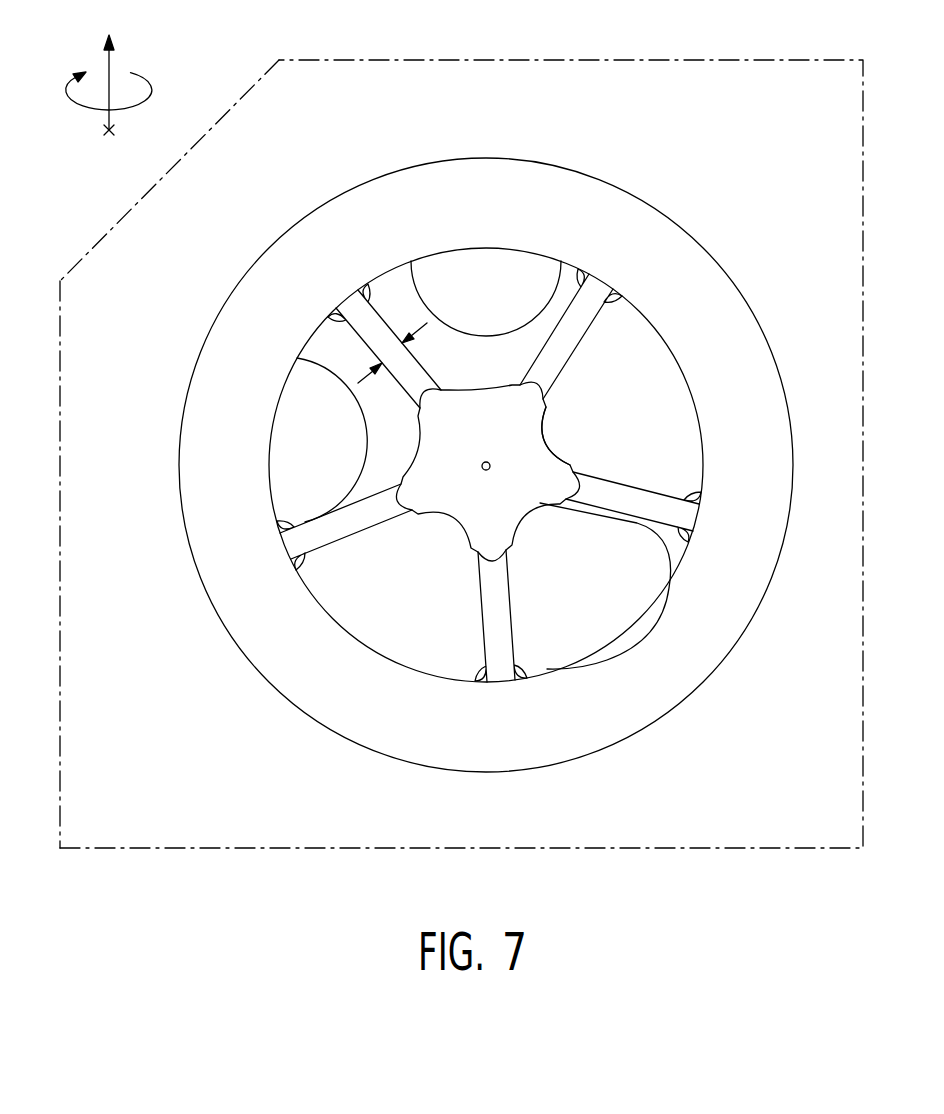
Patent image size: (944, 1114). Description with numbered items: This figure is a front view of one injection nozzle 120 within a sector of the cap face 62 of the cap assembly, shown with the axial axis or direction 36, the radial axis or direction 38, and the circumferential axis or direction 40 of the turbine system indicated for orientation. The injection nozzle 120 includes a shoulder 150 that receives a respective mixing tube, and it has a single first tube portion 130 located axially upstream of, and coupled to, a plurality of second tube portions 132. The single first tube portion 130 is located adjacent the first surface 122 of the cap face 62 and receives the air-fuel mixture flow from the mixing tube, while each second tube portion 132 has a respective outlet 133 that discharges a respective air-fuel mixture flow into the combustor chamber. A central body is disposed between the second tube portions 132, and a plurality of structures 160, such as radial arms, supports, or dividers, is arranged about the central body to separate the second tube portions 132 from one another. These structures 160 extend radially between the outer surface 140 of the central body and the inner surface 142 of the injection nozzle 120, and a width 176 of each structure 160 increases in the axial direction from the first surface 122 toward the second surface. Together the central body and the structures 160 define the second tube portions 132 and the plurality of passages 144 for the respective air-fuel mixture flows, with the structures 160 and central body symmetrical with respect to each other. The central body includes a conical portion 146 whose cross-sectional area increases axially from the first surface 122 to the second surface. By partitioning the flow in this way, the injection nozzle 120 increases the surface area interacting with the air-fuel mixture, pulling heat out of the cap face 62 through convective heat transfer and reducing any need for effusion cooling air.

The axial axis or direction 36 is at (114, 130).
The radial axis or direction 38 is at (130, 73).
The circumferential axis or direction 40 is at (87, 107).
The cap face 62 is at (270, 114).
The injection nozzle 120 is at (404, 706).
The first surface 122 is at (143, 391).
The single first tube portion 130 is at (458, 498).
The second tube portion 132 is at (400, 283).
The outlet 133 is at (537, 266).
The outer surface of the central body 140 is at (513, 492).
The inner surface of the injection nozzle 142 is at (273, 432).
The passage 144 is at (508, 299).
The conical portion 146 is at (485, 432).
The shoulder 150 is at (304, 256).
The structure 160 is at (568, 345).
The width of structure 176 is at (358, 383).